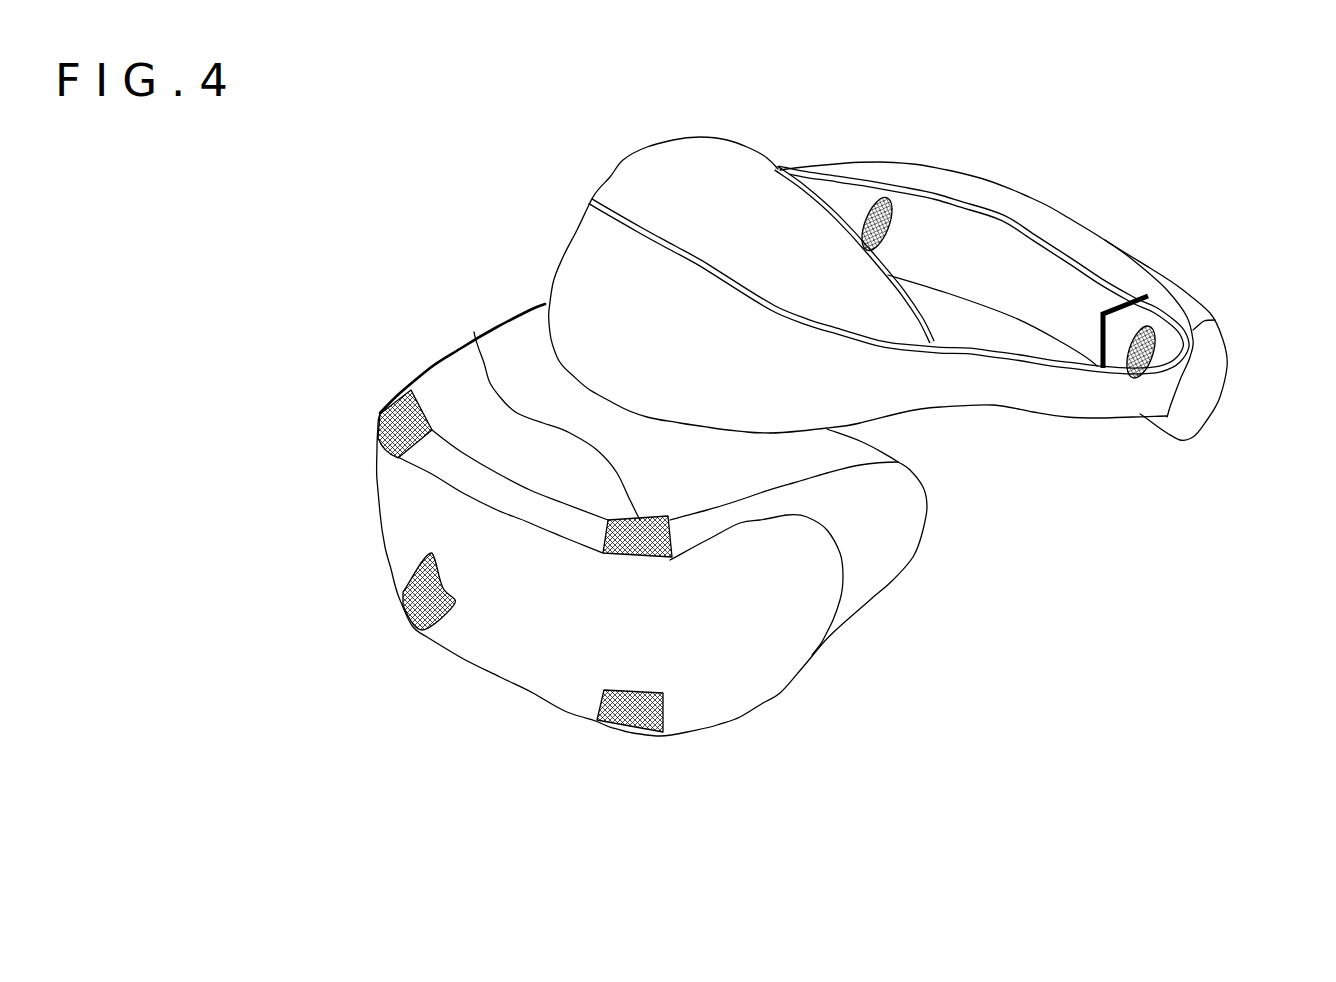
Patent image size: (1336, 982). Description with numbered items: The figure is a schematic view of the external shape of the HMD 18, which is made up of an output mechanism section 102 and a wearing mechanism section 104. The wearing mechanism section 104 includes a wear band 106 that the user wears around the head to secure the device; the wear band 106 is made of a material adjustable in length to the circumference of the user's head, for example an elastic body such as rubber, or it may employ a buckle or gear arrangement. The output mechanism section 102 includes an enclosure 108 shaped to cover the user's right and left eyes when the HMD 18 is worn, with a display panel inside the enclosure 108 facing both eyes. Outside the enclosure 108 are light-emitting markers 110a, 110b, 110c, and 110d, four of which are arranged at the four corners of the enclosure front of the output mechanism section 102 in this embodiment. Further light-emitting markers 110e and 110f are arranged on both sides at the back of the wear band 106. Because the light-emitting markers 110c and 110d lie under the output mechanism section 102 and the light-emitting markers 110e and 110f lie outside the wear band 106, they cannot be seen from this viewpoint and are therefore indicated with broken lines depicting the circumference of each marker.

The HMD 18 is at (1078, 657).
The output mechanism section 102 is at (367, 301).
The wearing mechanism section 104 is at (1235, 217).
The wear band 106 is at (1050, 413).
The enclosure 108 is at (773, 693).
The light-emitting marker 110a is at (408, 388).
The light-emitting marker 110b is at (474, 332).
The light-emitting marker 110c is at (413, 630).
The light-emitting marker 110d is at (618, 733).
The light-emitting marker 110e is at (1150, 327).
The light-emitting marker 110f is at (883, 203).